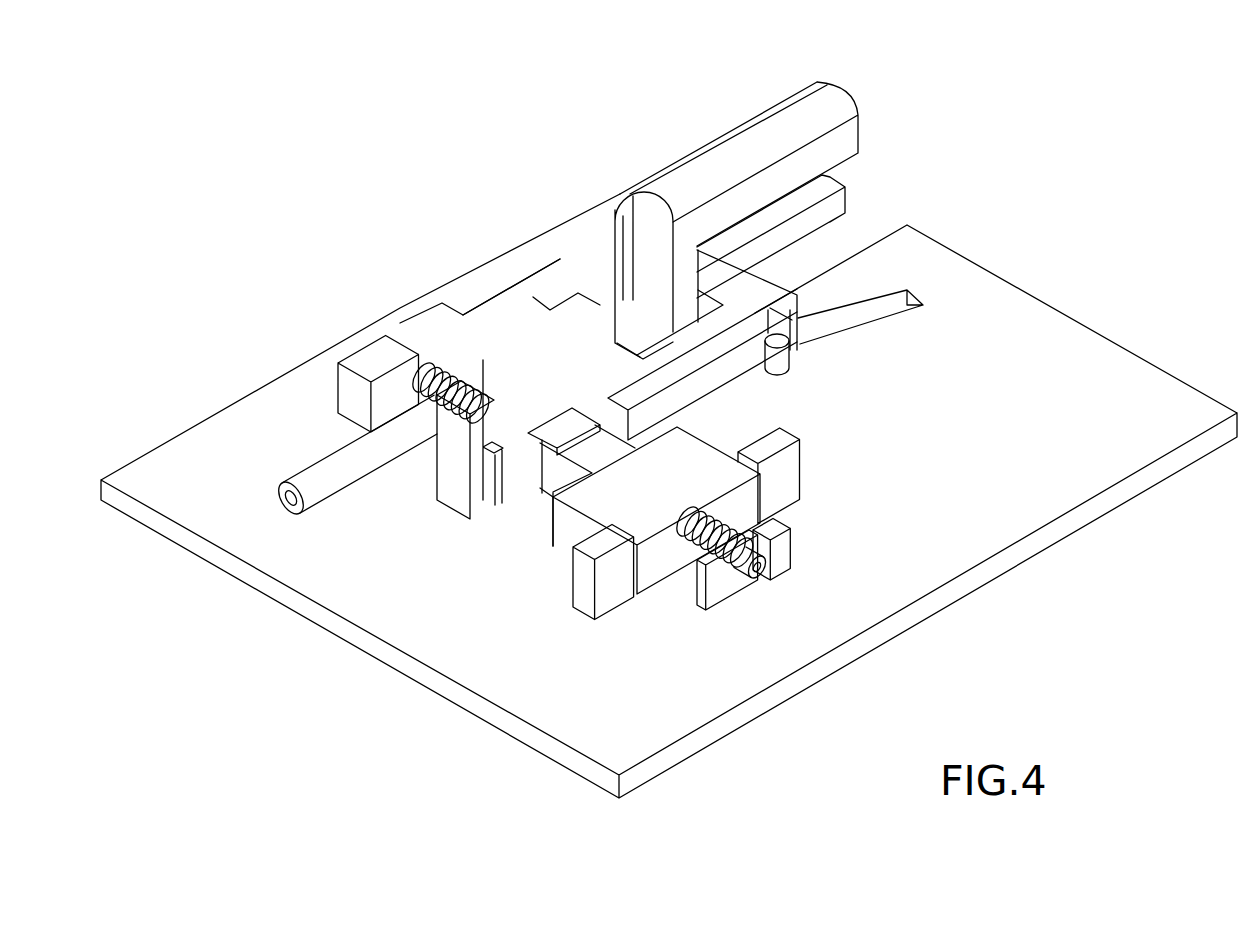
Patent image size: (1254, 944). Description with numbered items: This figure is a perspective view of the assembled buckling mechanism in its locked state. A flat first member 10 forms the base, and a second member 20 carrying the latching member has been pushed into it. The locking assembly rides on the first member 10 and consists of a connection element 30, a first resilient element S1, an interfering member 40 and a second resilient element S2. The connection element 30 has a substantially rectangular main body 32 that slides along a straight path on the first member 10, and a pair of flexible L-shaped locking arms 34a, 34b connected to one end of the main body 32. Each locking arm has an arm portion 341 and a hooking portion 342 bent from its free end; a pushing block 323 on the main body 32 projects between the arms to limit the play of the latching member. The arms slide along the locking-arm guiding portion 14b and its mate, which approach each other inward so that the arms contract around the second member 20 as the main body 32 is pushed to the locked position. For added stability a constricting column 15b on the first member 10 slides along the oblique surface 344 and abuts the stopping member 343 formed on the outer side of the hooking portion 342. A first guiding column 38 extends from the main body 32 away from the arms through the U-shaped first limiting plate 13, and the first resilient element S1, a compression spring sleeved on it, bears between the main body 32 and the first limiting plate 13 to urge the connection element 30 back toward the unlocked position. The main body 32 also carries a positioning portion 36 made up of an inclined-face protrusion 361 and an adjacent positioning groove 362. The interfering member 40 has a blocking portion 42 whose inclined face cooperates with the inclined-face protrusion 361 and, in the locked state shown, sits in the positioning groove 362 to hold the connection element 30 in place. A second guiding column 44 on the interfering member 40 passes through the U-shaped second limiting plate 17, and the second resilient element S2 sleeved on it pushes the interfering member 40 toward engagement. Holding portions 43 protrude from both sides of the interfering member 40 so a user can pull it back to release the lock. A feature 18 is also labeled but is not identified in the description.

The first member 10 is at (1168, 487).
The first limiting plate 13 is at (444, 464).
The locking-arm guiding portion 14b is at (898, 312).
The constricting column 15b is at (788, 362).
The second limiting plate 17 is at (720, 588).
The opening 18 is at (866, 224).
The second member 20 is at (762, 108).
The connection element 30 is at (493, 293).
The main body 32 is at (392, 347).
The pushing block 323 is at (595, 310).
The locking arm 34a is at (597, 250).
The locking arm 34b is at (673, 382).
The arm portion 341 is at (703, 378).
The hooking portion 342 is at (750, 290).
The stopping member 343 is at (792, 328).
The oblique surface 344 is at (745, 358).
The positioning portion 36 is at (576, 345).
The inclined-face protrusion 361 is at (513, 483).
The positioning groove 362 is at (556, 428).
The first guiding column 38 is at (328, 468).
The interfering member 40 is at (795, 506).
The blocking portion 42 is at (555, 488).
The holding portion 43 is at (793, 475).
The second guiding column 44 is at (760, 567).
The first resilient element S1 is at (427, 380).
The second resilient element S2 is at (673, 556).